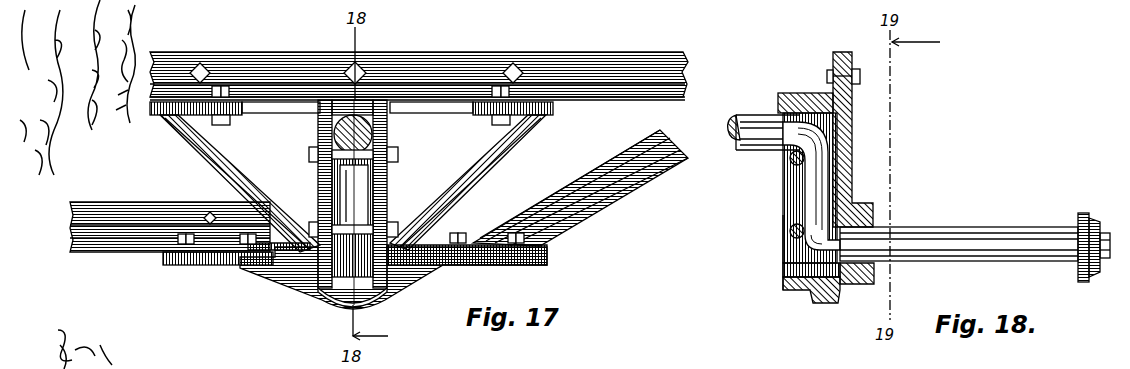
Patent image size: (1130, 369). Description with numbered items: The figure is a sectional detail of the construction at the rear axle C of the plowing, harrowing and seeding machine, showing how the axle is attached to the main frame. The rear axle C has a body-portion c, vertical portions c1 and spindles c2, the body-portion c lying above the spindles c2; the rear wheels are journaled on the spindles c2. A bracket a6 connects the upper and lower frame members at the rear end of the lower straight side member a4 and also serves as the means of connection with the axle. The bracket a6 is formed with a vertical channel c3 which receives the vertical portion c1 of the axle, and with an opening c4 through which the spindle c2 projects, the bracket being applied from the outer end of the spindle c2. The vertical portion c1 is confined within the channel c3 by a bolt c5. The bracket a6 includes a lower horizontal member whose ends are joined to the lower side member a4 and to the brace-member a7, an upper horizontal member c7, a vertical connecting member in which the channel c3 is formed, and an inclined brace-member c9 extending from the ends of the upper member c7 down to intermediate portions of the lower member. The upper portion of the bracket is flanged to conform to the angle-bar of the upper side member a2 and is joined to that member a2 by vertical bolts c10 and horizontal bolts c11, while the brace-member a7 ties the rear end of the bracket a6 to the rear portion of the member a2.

In FIG. 17, the straight side member a2 is at (170, 66).
In FIG. 18, the straight side member a2 is at (833, 58).
In FIG. 17, the horizontal bolt c11 is at (205, 76).
In FIG. 18, the horizontal bolt c11 is at (860, 73).
In FIG. 17, the upper horizontal member c7 is at (458, 112).
In FIG. 17, the vertical bolt c10 is at (536, 137).
In FIG. 17, the inclined brace-member c9 is at (478, 182).
In FIG. 17, the rear axle C is at (388, 134).
In FIG. 18, the rear axle C is at (745, 152).
In FIG. 17, the body-portion c is at (316, 133).
In FIG. 18, the body-portion c is at (750, 114).
In FIG. 17, the bracket a6 is at (322, 186).
In FIG. 17, the bolt c5 is at (397, 224).
In FIG. 18, the bolt c5 is at (790, 231).
In FIG. 17, the straight side member a4 is at (93, 253).
In FIG. 17, the brace-member a7 is at (595, 212).
In FIG. 18, the vertical portion c1 is at (806, 190).
In FIG. 18, the vertical channel c3 is at (796, 252).
In FIG. 18, the opening c4 is at (877, 266).
In FIG. 18, the spindle c2 is at (952, 230).